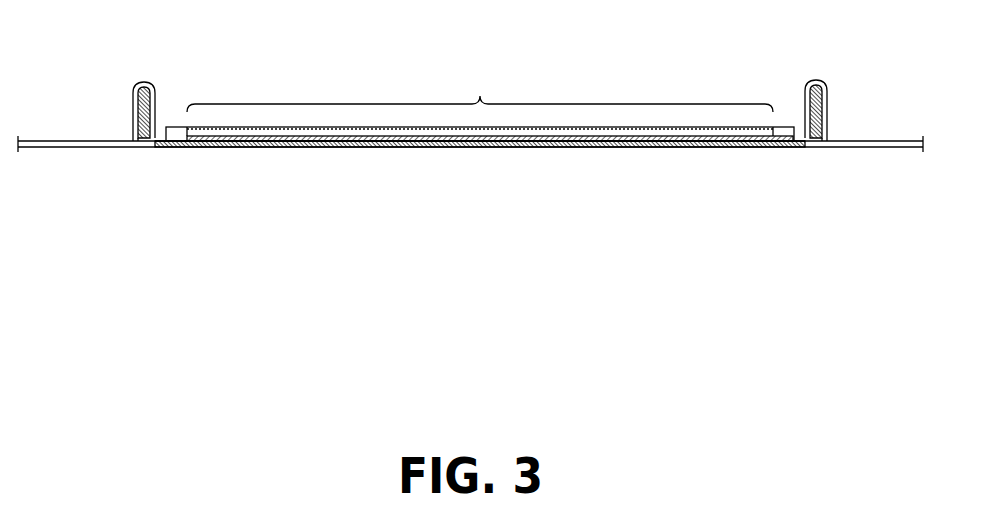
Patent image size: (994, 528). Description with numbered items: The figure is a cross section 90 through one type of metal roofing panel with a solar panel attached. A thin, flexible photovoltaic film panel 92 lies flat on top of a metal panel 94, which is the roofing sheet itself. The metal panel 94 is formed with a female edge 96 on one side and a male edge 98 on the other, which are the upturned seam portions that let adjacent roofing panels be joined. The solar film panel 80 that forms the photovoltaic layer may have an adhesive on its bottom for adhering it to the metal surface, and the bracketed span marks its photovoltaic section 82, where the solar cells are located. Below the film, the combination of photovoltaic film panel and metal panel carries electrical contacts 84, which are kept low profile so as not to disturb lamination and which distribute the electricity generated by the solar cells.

The solar film panel 80 is at (270, 127).
The photovoltaic section 82 is at (480, 88).
The electrical contacts 84 is at (428, 148).
The cross section 90 is at (629, 152).
The photovoltaic film panel 92 is at (650, 127).
The metal panel 94 is at (72, 148).
The female edge 96 is at (816, 79).
The male edge 98 is at (143, 81).